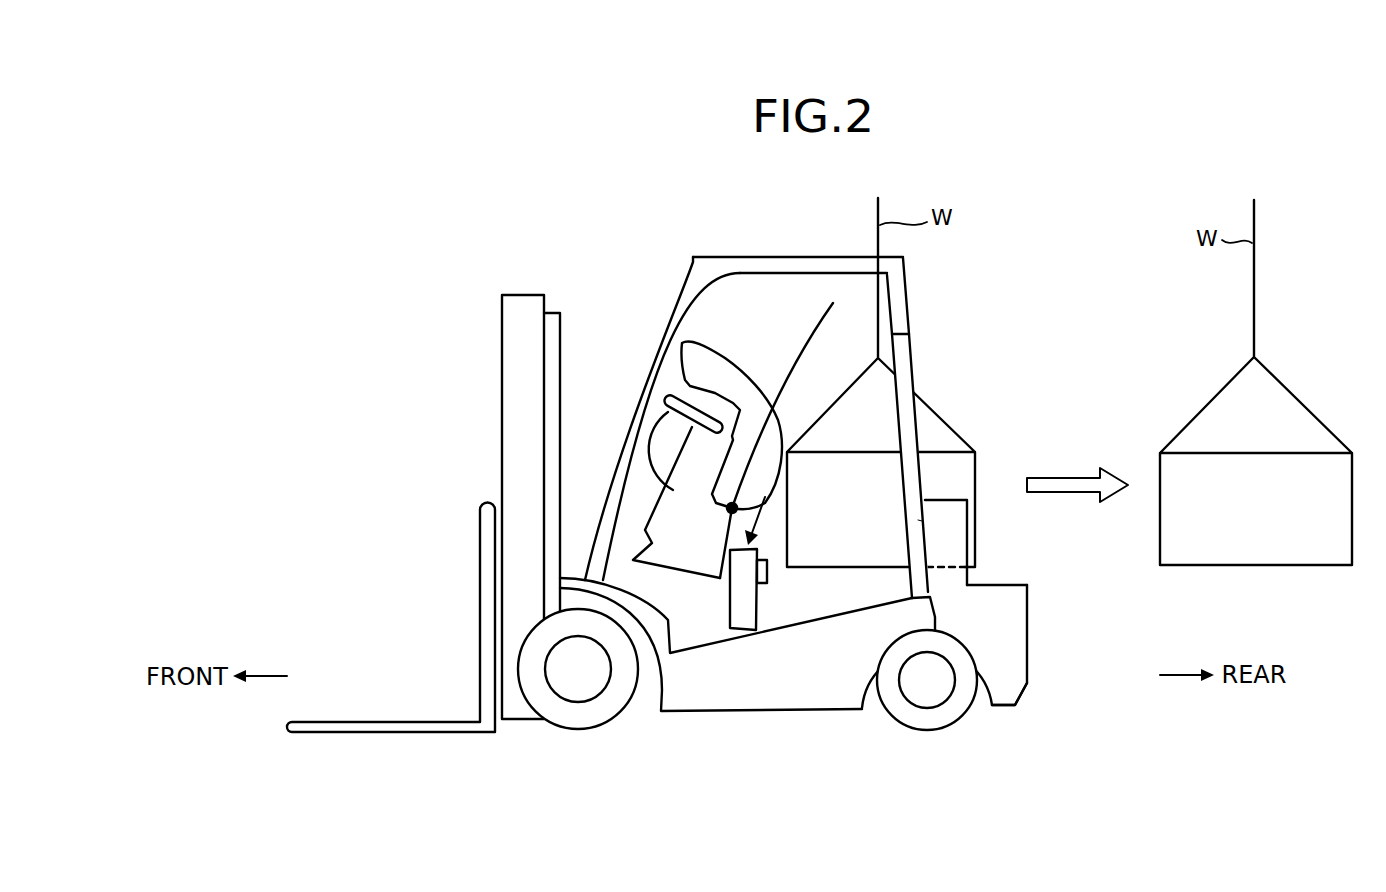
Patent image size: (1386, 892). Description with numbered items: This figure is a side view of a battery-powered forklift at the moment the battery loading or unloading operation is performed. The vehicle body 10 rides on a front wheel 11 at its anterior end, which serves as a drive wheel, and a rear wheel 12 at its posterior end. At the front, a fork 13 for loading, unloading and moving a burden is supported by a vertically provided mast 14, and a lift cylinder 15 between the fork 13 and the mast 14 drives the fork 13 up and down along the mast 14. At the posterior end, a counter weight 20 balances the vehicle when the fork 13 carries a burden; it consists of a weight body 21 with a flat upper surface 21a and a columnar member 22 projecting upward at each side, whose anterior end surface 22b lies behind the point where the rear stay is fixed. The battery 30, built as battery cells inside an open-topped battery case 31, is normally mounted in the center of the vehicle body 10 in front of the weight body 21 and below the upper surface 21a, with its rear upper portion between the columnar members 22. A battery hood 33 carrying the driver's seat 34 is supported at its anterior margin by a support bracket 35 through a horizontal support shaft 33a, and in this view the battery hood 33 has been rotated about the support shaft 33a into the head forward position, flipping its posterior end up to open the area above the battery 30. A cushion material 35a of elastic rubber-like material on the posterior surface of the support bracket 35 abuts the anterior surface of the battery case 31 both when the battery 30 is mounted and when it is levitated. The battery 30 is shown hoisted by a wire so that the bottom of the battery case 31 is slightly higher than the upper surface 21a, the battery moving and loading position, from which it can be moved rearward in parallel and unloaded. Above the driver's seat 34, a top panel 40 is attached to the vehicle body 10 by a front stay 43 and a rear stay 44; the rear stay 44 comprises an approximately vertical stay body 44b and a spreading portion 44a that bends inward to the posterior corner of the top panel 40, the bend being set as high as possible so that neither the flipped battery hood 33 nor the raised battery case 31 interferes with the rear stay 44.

The vehicle body 10 is at (783, 703).
The front wheel 11 is at (565, 718).
The rear wheel 12 is at (913, 717).
The fork 13 is at (348, 722).
The mast 14 is at (502, 351).
The lift cylinder 15 is at (553, 352).
The counter weight 20 is at (1035, 602).
The weight body 21 is at (1037, 645).
The upper surface of the weight body 21a is at (988, 580).
The columnar member 22 is at (957, 532).
The anterior end surface of the columnar member 22b is at (912, 520).
The battery 30 is at (967, 470).
The battery case 31 is at (1218, 402).
The battery hood 33 is at (802, 343).
The support shaft 33a is at (728, 512).
The driver's seat 34 is at (710, 367).
The support bracket 35 is at (737, 610).
The cushion material 35a is at (767, 570).
The top panel 40 is at (842, 258).
The front stay 43 is at (678, 307).
The rear stay 44 is at (968, 444).
The spreading portion 44a is at (900, 297).
The stay body 44b is at (942, 466).